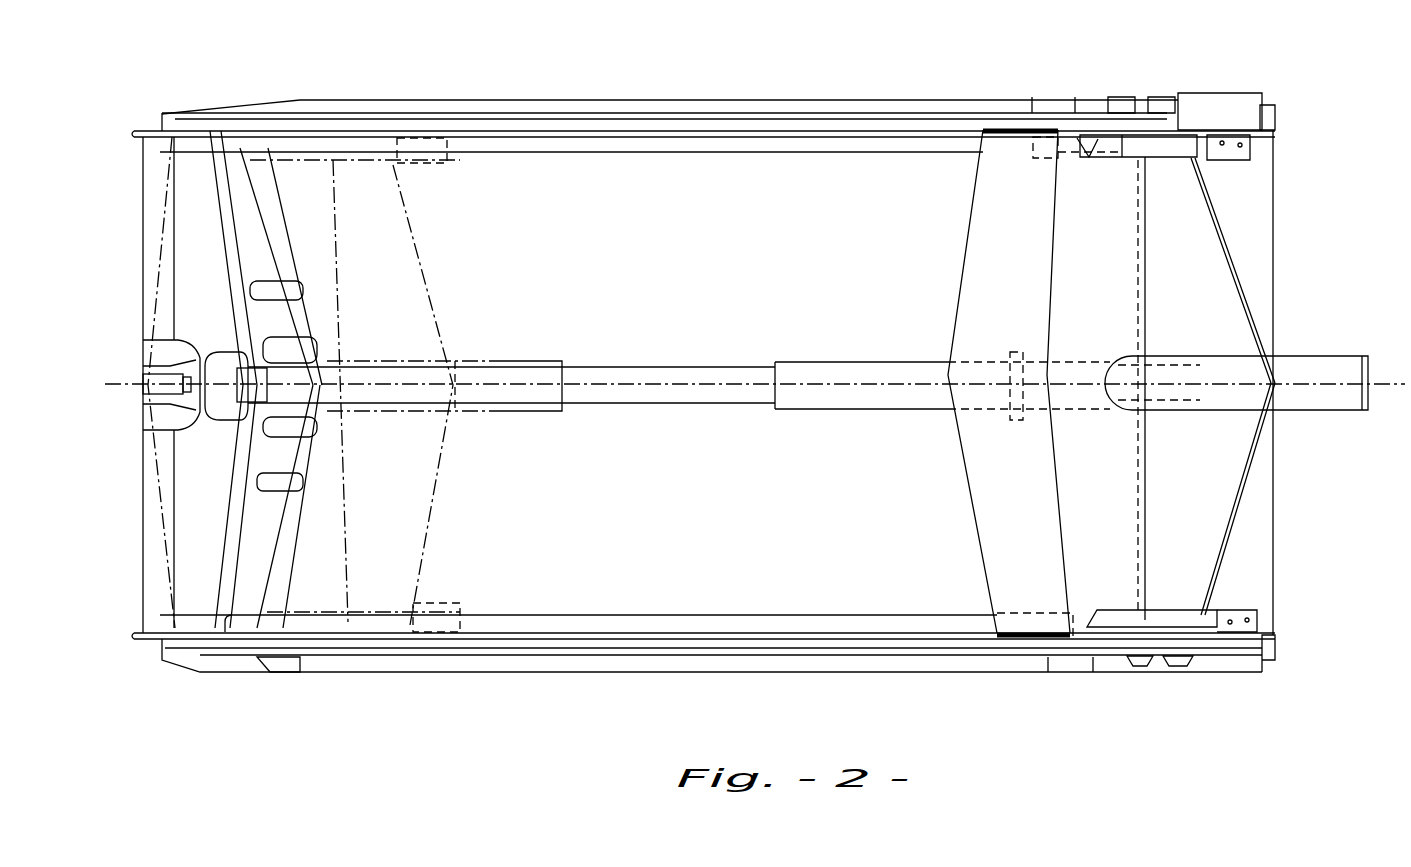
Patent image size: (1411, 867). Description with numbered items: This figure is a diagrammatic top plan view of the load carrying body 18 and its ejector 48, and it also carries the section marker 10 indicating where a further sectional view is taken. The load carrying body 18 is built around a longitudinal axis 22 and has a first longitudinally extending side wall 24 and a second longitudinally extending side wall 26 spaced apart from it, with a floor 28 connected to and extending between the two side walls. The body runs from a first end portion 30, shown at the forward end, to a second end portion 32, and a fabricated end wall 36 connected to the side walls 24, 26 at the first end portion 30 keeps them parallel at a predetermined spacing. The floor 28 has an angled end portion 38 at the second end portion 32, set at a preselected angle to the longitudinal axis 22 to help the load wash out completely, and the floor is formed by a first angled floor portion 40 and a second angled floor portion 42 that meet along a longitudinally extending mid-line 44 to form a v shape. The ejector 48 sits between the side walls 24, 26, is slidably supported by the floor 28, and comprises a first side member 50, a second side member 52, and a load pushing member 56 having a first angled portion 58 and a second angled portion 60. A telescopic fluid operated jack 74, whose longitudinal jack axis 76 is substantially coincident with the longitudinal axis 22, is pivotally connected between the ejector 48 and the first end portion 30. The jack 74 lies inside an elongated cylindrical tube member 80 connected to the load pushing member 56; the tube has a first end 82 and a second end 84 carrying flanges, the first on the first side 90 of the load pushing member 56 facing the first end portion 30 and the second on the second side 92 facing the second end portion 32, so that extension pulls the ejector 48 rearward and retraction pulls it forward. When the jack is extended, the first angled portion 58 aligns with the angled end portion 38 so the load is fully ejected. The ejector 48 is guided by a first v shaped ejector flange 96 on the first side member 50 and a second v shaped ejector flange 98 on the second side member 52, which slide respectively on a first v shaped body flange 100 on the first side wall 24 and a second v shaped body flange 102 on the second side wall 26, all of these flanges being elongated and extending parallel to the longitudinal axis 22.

The load carrying body 18 is at (703, 99).
The longitudinal axis 22 is at (136, 364).
The first longitudinally extending side wall 24 is at (688, 655).
The second longitudinally extending side wall 26 is at (570, 104).
The floor 28 is at (755, 379).
The first end portion 30 is at (223, 645).
The second end portion 32 is at (1253, 587).
The end wall 36 is at (147, 490).
The angled end portion 38 is at (1262, 230).
The first angled floor portion 40 is at (493, 508).
The second angled floor portion 42 is at (571, 261).
The longitudinally extending mid-line 44 is at (694, 386).
The ejector 48 is at (440, 252).
The first side member 50 is at (1120, 612).
The second side member 52 is at (1130, 160).
The load pushing member 56 is at (1083, 595).
The first angled portion 58 is at (1223, 270).
The second angled portion 60 is at (1110, 388).
The jack 74 is at (739, 408).
The longitudinal jack axis 76 is at (117, 382).
The elongated cylindrical tube member 80 is at (1311, 356).
The first end 82 is at (1372, 376).
The second end 84 is at (1010, 412).
The first side 90 is at (1240, 203).
The second side 92 is at (932, 273).
The first v shaped ejector flange 96 is at (549, 617).
The second v shaped ejector flange 98 is at (659, 152).
The first v shaped body flange 100 is at (558, 640).
The second v shaped body flange 102 is at (835, 124).
The section line 10 is at (932, 462).